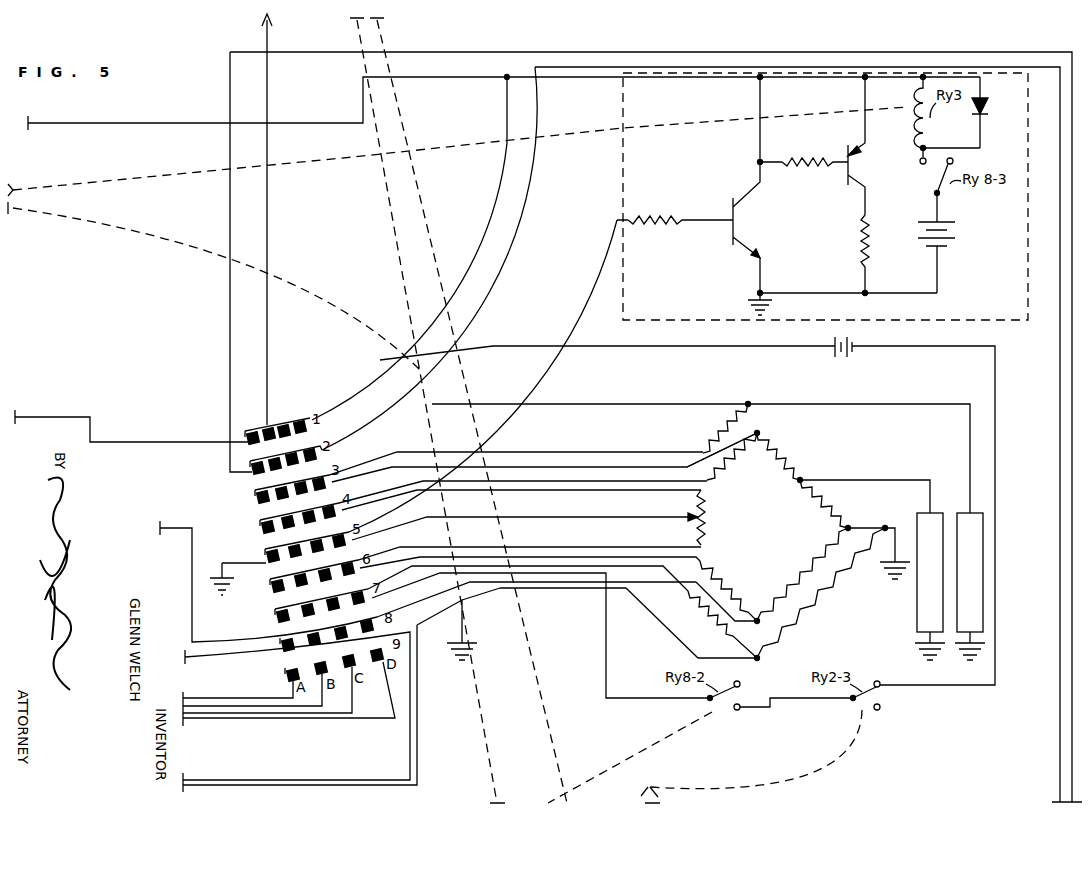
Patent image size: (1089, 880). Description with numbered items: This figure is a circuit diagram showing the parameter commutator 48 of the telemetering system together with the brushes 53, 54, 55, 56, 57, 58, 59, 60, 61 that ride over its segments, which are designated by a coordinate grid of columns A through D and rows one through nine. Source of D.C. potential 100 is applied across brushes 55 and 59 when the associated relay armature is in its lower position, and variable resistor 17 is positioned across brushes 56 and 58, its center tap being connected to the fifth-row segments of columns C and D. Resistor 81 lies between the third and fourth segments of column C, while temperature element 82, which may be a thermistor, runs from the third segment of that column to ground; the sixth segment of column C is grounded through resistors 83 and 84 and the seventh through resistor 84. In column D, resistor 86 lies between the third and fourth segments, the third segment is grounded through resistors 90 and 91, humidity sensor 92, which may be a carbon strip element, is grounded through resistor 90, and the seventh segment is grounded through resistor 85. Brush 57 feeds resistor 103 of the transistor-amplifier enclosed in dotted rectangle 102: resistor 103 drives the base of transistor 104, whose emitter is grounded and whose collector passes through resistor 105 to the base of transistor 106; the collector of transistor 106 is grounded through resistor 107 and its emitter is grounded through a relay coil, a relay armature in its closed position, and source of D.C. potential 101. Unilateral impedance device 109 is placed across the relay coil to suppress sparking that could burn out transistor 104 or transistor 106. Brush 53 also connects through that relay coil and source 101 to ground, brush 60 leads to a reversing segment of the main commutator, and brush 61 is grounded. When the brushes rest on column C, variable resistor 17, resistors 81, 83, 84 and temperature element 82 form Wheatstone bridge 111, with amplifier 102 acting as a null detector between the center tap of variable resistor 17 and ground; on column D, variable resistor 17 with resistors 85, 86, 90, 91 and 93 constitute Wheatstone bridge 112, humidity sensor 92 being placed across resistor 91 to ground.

The variable resistor 17 is at (708, 517).
The parameter commutator 48 is at (262, 608).
The brush 53 is at (327, 413).
The brush 54 is at (337, 441).
The brush 55 is at (349, 468).
The brush 56 is at (361, 496).
The brush 57 is at (372, 524).
The brush 58 is at (384, 551).
The brush 59 is at (395, 579).
The brush 60 is at (408, 606).
The brush 61 is at (434, 620).
The resistor 81 is at (726, 423).
The temperature element 82 is at (965, 513).
The resistor 83 is at (700, 611).
The resistor 84 is at (830, 591).
The resistor 85 is at (818, 565).
The resistor 86 is at (740, 466).
The resistor 90 is at (782, 455).
The resistor 91 is at (836, 509).
The humidity sensor 92 is at (924, 513).
The resistor 93 is at (730, 587).
The source of D.C. potential 100 is at (850, 357).
The source of D.C. potential 101 is at (952, 232).
The transistor-amplifier 102 is at (623, 128).
The resistor 103 is at (669, 216).
The transistor 104 is at (738, 217).
The resistor 105 is at (811, 159).
The transistor 106 is at (852, 164).
The resistor 107 is at (868, 232).
The unilateral impedance device 109 is at (988, 107).
The Wheatstone bridge 111 is at (694, 442).
The Wheatstone bridge 112 is at (802, 513).